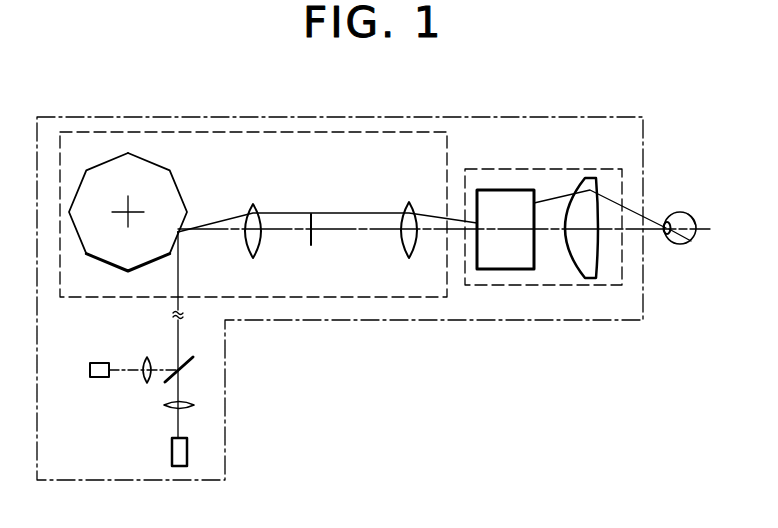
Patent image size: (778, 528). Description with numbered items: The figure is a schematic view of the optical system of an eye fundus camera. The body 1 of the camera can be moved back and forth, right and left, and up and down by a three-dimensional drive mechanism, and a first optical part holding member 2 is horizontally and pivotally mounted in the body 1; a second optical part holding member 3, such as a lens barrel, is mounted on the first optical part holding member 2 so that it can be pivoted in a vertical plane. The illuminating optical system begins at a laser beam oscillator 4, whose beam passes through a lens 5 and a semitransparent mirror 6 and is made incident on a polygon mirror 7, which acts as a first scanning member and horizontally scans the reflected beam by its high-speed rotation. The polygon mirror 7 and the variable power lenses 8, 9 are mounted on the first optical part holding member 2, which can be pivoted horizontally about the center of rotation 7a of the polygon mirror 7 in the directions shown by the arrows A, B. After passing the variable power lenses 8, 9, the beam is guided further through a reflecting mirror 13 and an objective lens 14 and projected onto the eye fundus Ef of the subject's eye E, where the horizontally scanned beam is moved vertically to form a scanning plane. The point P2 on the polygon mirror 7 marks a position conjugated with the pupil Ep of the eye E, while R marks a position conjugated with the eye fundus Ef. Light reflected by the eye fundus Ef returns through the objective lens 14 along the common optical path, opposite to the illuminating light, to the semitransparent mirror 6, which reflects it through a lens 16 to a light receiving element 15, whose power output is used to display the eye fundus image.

The body of eye fundus camera 1 is at (227, 425).
The first optical part holding member 2 is at (268, 298).
The second optical part holding member 3 is at (543, 286).
The laser beam oscillator 4 is at (172, 452).
The lens 5 is at (164, 405).
The semitransparent mirror 6 is at (193, 365).
The polygon mirror 7 is at (165, 170).
The center of rotation of polygon mirror 7a is at (128, 222).
The variable power lens 8 is at (252, 204).
The variable power lens 9 is at (408, 202).
The reflecting mirror 13 is at (513, 190).
The objective lens 14 is at (587, 178).
The light receiving element 15 is at (102, 362).
The lens 16 is at (147, 357).
The position conjugated with pupil P2 is at (185, 241).
The position conjugated with eye fundus R is at (311, 205).
The arrow of horizontal pivoting direction A is at (337, 148).
The arrow of horizontal pivoting direction B is at (340, 257).
The subject's eye E is at (680, 244).
The pupil Ep is at (669, 215).
The eye fundus Ef is at (689, 215).